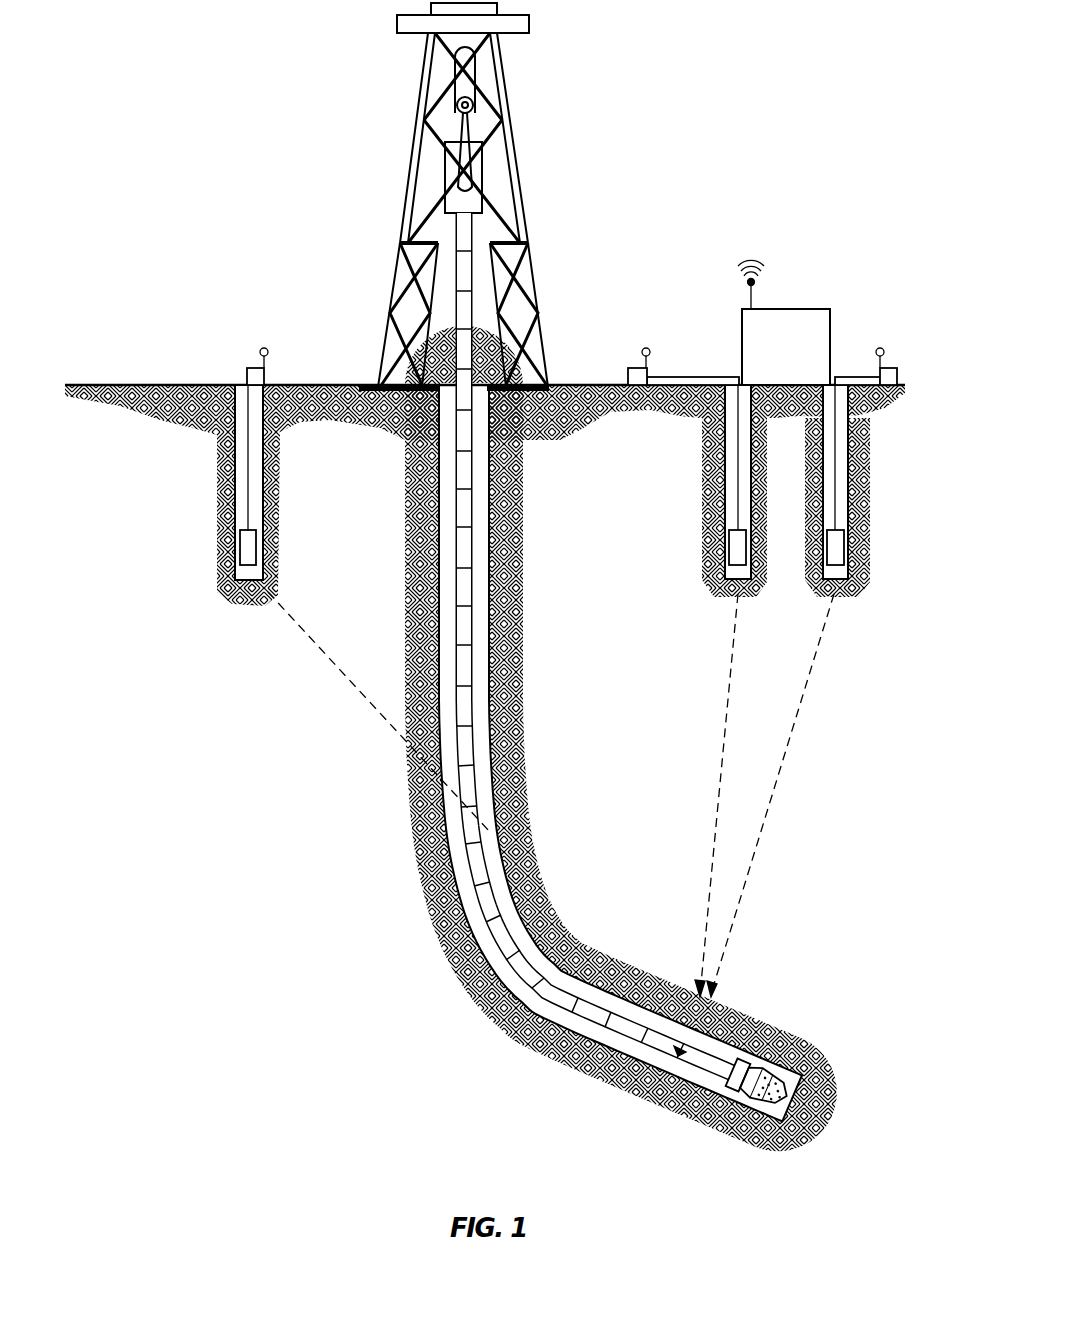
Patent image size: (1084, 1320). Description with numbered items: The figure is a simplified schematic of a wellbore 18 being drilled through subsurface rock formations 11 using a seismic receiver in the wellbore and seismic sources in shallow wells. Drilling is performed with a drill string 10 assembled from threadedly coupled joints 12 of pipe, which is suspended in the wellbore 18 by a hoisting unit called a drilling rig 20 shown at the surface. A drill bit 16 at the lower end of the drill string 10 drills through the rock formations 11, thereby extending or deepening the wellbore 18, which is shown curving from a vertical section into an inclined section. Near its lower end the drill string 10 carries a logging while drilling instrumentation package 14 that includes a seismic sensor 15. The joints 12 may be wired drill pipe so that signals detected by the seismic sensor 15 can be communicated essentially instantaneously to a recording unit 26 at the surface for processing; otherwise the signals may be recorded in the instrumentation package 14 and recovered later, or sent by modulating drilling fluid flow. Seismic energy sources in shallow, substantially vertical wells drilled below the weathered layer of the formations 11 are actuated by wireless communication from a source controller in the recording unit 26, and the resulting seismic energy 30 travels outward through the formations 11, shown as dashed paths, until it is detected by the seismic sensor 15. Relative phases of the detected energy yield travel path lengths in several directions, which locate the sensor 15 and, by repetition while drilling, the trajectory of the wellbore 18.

The drill string 10 is at (552, 693).
The subsurface rock formations 11 is at (556, 432).
The joints of pipe 12 is at (458, 471).
The logging while drilling instrumentation package 14 is at (682, 1074).
The seismic sensor 15 is at (724, 1070).
The drill bit 16 is at (776, 1068).
The wellbore 18 is at (586, 1035).
The drilling rig 20 is at (517, 152).
The recording unit 26 is at (789, 309).
The seismic energy 30 is at (746, 300).